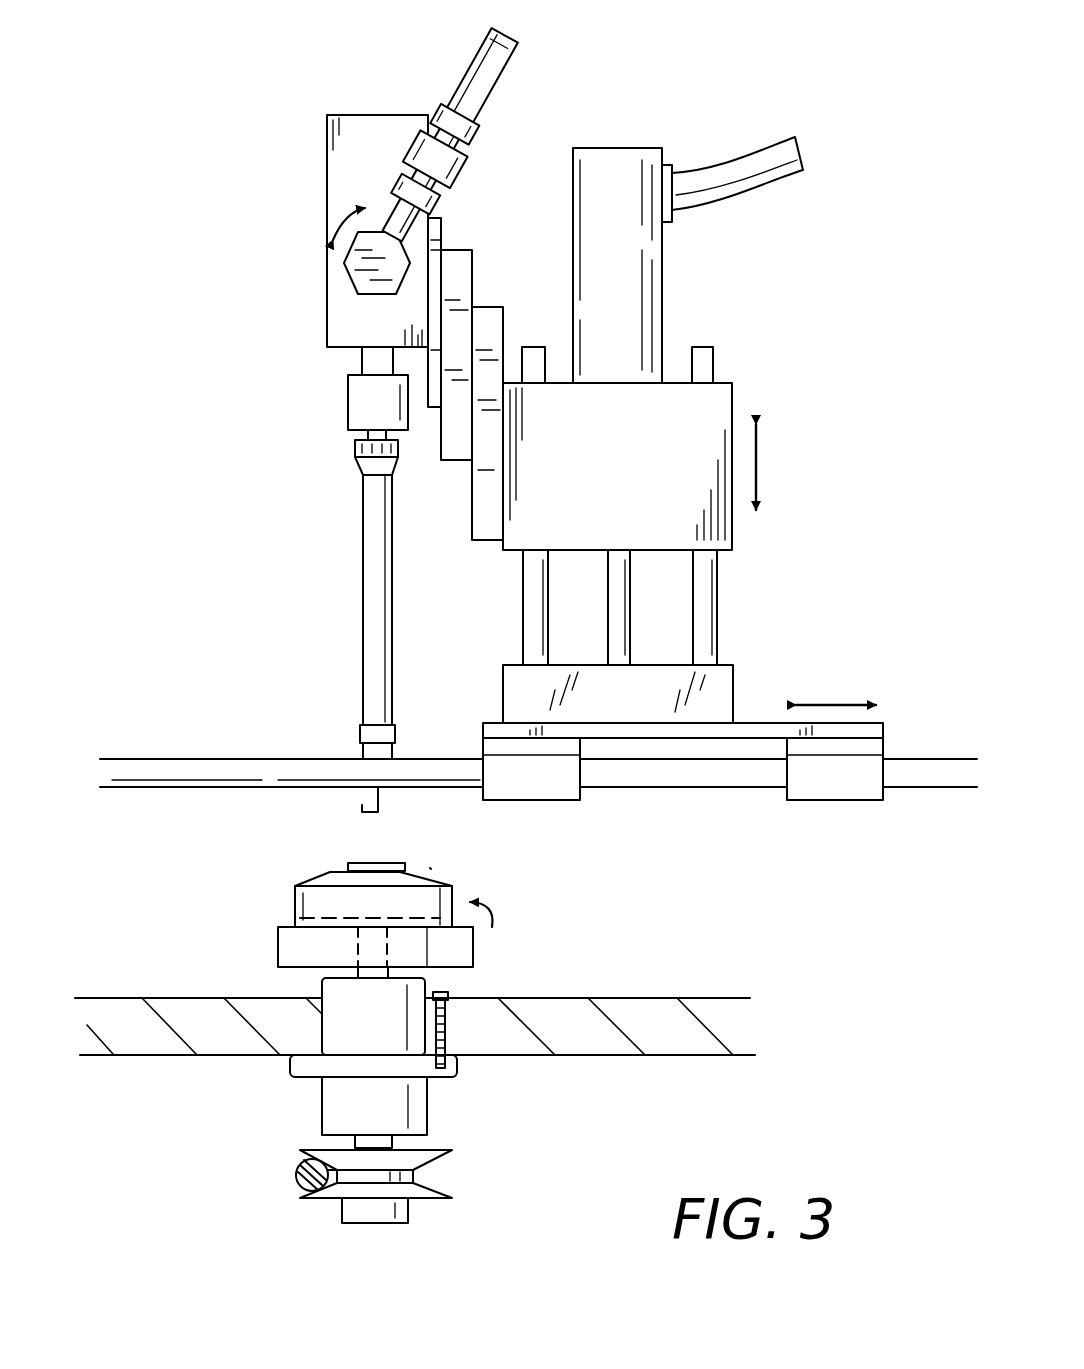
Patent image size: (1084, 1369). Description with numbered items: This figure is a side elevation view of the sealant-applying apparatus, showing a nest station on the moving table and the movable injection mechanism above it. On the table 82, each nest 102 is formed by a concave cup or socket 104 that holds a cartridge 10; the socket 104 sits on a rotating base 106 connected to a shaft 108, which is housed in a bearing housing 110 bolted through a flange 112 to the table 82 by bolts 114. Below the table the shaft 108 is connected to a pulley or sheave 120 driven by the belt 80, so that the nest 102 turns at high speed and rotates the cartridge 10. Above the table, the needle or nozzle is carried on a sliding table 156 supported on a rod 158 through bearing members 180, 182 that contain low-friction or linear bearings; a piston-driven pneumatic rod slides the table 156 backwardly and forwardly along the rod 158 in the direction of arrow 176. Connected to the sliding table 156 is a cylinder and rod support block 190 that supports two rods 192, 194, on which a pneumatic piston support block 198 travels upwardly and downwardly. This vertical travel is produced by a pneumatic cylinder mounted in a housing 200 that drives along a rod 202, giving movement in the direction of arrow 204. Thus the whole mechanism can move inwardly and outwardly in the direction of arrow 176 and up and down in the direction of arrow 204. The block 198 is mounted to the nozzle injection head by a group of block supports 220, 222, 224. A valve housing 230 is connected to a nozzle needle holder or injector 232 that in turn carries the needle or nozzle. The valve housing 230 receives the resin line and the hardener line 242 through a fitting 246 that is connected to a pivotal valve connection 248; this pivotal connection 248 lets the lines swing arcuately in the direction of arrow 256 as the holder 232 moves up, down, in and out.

The cartridge 10 is at (435, 868).
The belt 80 is at (300, 1182).
The table 82 is at (727, 1016).
The nest 102 is at (290, 912).
The cup or socket 104 is at (300, 878).
The rotating base 106 is at (470, 972).
The shaft 108 is at (337, 968).
The bearing housing 110 is at (330, 1022).
The flange 112 is at (300, 1074).
The bolts 114 is at (452, 1038).
The pulley or sheave 120 is at (430, 1205).
The sliding table 156 is at (876, 728).
The rod 158 is at (700, 800).
The arrow 176 is at (838, 700).
The bearing member 180 is at (786, 800).
The bearing member 182 is at (562, 790).
The cylinder and rod support block 190 is at (713, 697).
The rod 192 is at (706, 590).
The rod 194 is at (531, 586).
The pneumatic piston support block 198 is at (708, 408).
The housing 200 is at (642, 305).
The rod 202 is at (616, 616).
The arrow 204 is at (762, 465).
The block support 220 is at (478, 307).
The block support 222 is at (445, 252).
The block support 224 is at (434, 218).
The valve housing 230 is at (360, 120).
The nozzle needle holder or injector 232 is at (366, 530).
The hardener line 242 is at (530, 35).
The fitting 246 is at (422, 160).
The pivotal valve connection 248 is at (350, 272).
The arrow 256 is at (330, 205).